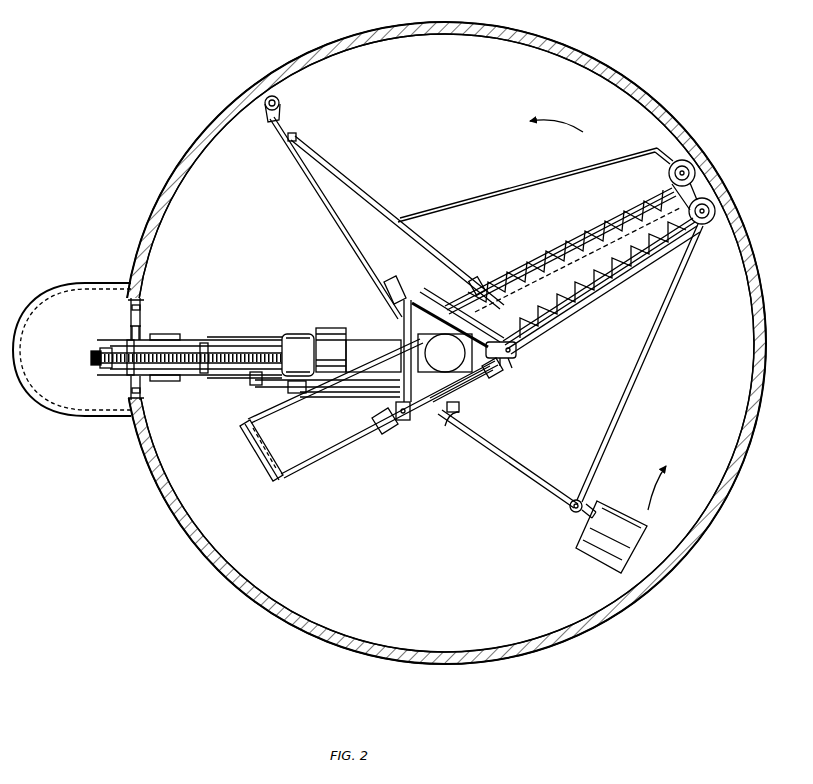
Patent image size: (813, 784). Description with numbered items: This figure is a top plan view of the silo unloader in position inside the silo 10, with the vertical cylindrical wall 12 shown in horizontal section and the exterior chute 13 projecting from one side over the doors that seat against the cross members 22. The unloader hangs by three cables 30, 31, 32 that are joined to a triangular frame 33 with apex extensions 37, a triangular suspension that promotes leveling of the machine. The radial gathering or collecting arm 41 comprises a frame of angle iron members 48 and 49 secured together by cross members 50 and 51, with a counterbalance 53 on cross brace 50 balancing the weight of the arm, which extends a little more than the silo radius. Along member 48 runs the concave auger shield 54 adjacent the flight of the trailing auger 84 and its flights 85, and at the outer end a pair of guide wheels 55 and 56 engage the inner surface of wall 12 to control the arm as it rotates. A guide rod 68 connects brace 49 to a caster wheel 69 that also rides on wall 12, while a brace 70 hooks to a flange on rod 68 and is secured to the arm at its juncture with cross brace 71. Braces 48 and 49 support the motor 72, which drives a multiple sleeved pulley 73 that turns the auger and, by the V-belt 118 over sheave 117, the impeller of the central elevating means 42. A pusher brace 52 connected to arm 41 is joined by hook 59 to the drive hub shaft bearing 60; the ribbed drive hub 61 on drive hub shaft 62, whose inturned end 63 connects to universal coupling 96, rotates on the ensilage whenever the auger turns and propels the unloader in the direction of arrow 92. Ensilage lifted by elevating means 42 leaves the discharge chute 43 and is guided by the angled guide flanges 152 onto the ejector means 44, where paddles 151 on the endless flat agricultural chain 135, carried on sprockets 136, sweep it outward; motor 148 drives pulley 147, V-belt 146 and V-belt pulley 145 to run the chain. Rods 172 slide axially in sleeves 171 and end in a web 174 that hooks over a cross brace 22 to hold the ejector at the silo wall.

The silo 10 is at (582, 44).
The vertical cylindrical wall 12 is at (435, 32).
The exterior chute 13 is at (56, 284).
The cross members 22 is at (141, 316).
The cable 30 is at (394, 280).
The cable 31 is at (401, 421).
The cable 32 is at (518, 351).
The triangular frame 33 is at (410, 299).
The apex extensions 37 is at (512, 362).
The gathering or collecting arm means 41 is at (532, 246).
The elevating means 42 is at (472, 298).
The discharge chute 43 is at (383, 360).
The ejector means 44 is at (244, 338).
The angle iron member 48 is at (610, 282).
The angle iron member 49 is at (580, 226).
The cross member 50 is at (281, 478).
The cross member 51 is at (713, 182).
The pusher brace 52 is at (667, 318).
The counterbalance 53 is at (256, 453).
The auger shield 54 is at (644, 266).
The guide wheel 55 is at (684, 160).
The guide wheel 56 is at (716, 208).
The hook 59 is at (585, 503).
The drive hub shaft bearing 60 is at (572, 511).
The ribbed drive hub 61 is at (600, 541).
The drive hub shaft 62 is at (531, 479).
The inturned end 63 is at (444, 426).
The guide rod 68 is at (338, 244).
The caster wheel 69 is at (281, 101).
The brace 70 is at (344, 178).
The cross brace 71 is at (482, 280).
The motor 72 is at (362, 398).
The multiple sleeved pulley 73 is at (385, 428).
The trailing auger 84 is at (586, 286).
The auger flight 85 is at (598, 214).
The arrow 92 is at (610, 307).
The universal coupling 96 is at (459, 407).
The sheave 117 is at (497, 370).
The V-belt 118 is at (460, 383).
The endless flat agricultural chain 135 is at (192, 346).
The sprockets 136 is at (91, 358).
The V-belt pulley 145 is at (356, 388).
The V-belt 146 is at (300, 394).
The pulley 147 is at (257, 378).
The motor 148 is at (310, 360).
The paddles 151 is at (205, 373).
The angled guide flanges 152 is at (333, 328).
The sleeve 171 is at (165, 334).
The rod 172 is at (262, 337).
The web 174 is at (130, 336).